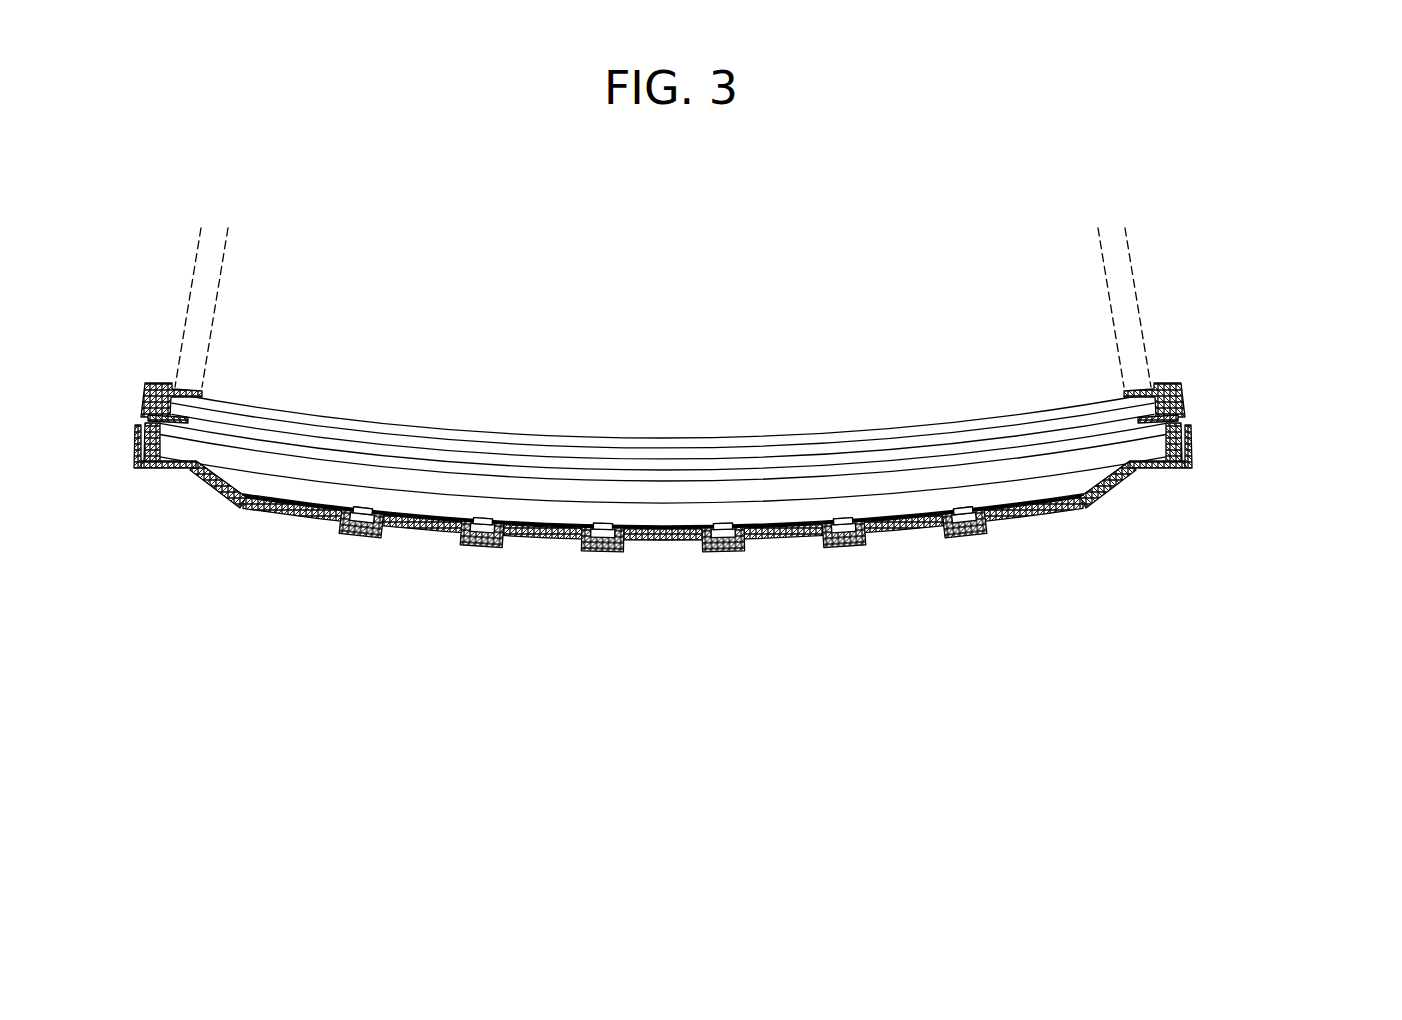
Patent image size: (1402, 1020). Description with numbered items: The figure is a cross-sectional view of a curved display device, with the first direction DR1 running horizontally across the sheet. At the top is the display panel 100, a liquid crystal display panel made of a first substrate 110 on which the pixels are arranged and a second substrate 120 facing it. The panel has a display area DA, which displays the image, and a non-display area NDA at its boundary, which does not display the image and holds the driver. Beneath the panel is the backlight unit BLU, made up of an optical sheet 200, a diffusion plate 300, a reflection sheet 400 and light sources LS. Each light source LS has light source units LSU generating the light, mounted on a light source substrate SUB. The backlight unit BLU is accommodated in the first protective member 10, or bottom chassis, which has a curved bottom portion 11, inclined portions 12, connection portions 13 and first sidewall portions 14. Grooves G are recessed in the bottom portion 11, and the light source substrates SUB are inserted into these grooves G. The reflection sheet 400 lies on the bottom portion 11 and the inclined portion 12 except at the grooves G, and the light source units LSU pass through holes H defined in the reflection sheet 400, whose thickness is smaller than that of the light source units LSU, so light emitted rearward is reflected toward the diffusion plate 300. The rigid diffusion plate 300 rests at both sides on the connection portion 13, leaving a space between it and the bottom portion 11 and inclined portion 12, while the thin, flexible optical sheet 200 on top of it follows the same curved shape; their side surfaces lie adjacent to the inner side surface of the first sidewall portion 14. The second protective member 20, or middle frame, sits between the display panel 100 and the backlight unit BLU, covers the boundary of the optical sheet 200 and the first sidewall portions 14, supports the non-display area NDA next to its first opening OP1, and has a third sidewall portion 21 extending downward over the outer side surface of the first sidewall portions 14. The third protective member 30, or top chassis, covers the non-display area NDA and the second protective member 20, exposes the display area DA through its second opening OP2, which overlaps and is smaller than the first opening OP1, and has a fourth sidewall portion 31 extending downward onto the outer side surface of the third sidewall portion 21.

The first protective member 10 is at (634, 541).
The bottom portion 11 is at (288, 520).
The inclined portion 12 is at (213, 488).
The connection portion 13 is at (168, 468).
The first sidewall portion 14 is at (141, 464).
The second protective member 20 is at (143, 432).
The third sidewall portion 21 is at (143, 450).
The third protective member 30 is at (172, 385).
The fourth sidewall portion 31 is at (139, 410).
The display panel 100 is at (663, 390).
The first substrate 110 is at (523, 451).
The second substrate 120 is at (473, 437).
The optical sheet 200 is at (1190, 427).
The diffusion plate 300 is at (1192, 446).
The reflection sheet 400 is at (1173, 475).
The backlight unit BLU is at (769, 492).
The light source LS is at (750, 513).
The light source unit LSU is at (966, 512).
The light source substrate SUB is at (1000, 528).
The groove G is at (483, 543).
The hole H is at (602, 531).
The display area DA is at (1100, 242).
The non-display area NDA is at (226, 242).
The first opening OP1 is at (943, 452).
The second opening OP2 is at (1045, 402).
The first direction DR1 is at (994, 666).